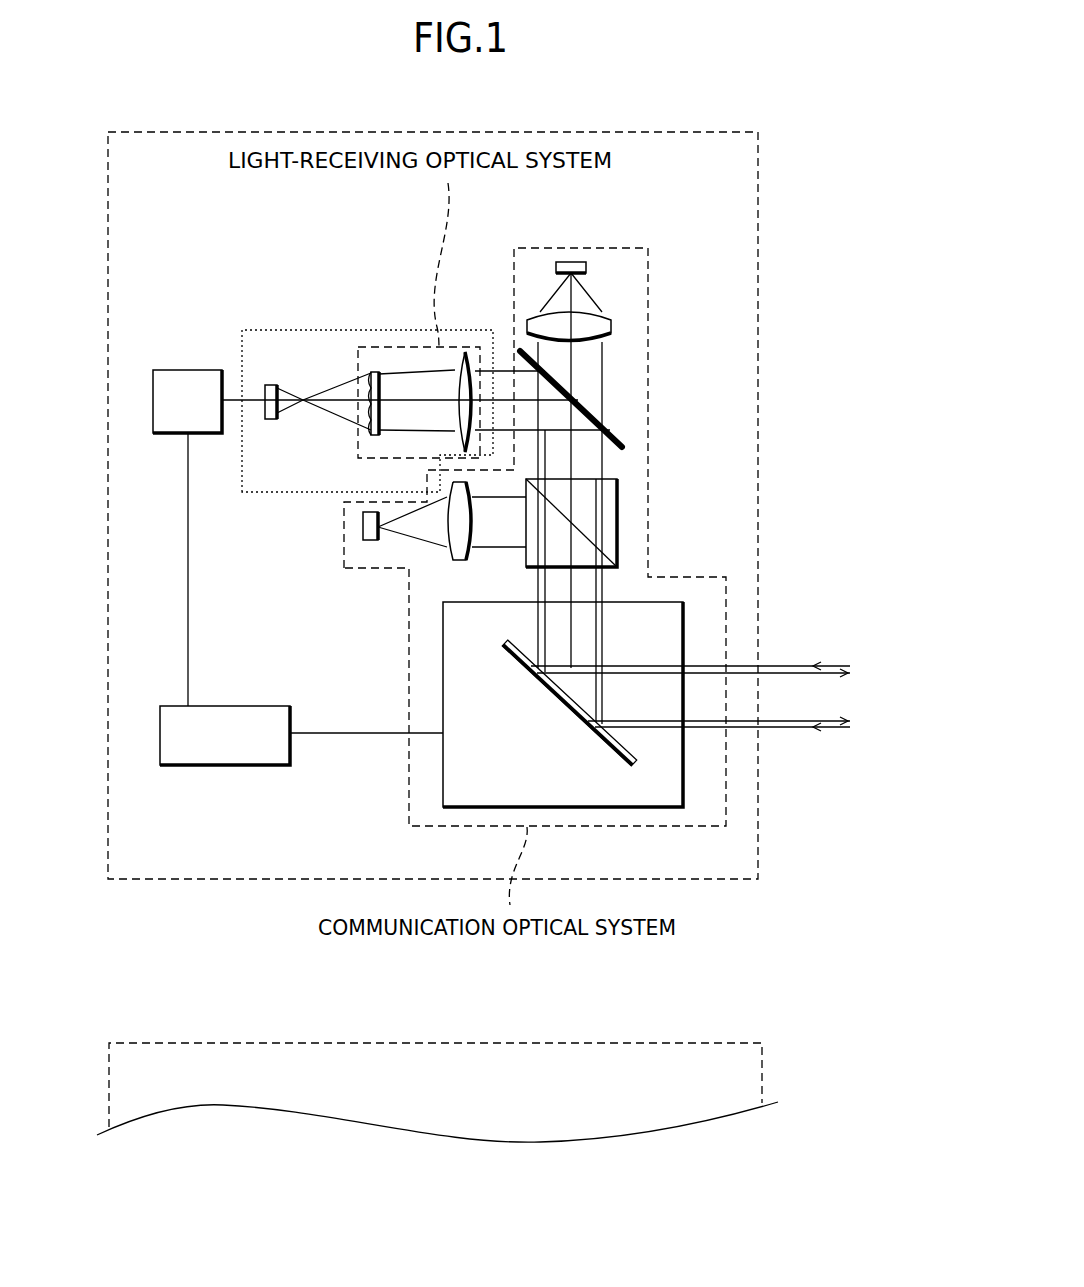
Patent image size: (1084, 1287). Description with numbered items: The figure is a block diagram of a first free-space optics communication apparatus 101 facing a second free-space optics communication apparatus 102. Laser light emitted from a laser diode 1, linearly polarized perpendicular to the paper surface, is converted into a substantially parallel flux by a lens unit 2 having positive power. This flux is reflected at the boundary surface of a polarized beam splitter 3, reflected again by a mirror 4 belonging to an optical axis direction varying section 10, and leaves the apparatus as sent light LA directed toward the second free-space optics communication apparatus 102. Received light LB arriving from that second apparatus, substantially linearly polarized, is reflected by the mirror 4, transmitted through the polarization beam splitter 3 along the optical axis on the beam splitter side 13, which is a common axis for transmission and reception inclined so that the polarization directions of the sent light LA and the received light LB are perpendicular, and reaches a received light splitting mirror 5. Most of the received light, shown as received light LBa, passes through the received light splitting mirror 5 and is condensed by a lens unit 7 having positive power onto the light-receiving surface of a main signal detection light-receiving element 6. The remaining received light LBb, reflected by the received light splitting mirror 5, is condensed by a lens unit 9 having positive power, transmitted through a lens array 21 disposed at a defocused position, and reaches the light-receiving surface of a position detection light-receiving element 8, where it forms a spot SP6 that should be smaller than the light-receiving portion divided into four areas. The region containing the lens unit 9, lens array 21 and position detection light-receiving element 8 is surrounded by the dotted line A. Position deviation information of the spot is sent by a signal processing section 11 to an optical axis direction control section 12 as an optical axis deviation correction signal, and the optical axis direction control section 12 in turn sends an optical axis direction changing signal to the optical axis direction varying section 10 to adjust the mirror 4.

The laser diode 1 is at (363, 525).
The lens unit 2 is at (465, 555).
The polarized beam splitter 3 is at (617, 497).
The mirror 4 is at (635, 760).
The received light splitting mirror 5 is at (612, 430).
The main signal detection light-receiving element 6 is at (573, 262).
The lens unit 7 is at (602, 332).
The position detection light-receiving element 8 is at (266, 385).
The lens unit 9 is at (465, 350).
The optical axis direction varying section 10 is at (683, 637).
The signal processing section 11 is at (177, 370).
The optical axis direction control section 12 is at (218, 758).
The optical axis on the beam splitter side 13 is at (570, 623).
The lens array 21 is at (370, 432).
The first free-space optics communication apparatus 101 is at (608, 132).
The second free-space optics communication apparatus 102 is at (612, 1043).
The dotted line A is at (240, 352).
The spot SP6 is at (280, 390).
The received light LBa is at (573, 363).
The received light LBb is at (503, 400).
The sent light LA is at (863, 672).
The received light LB is at (917, 665).